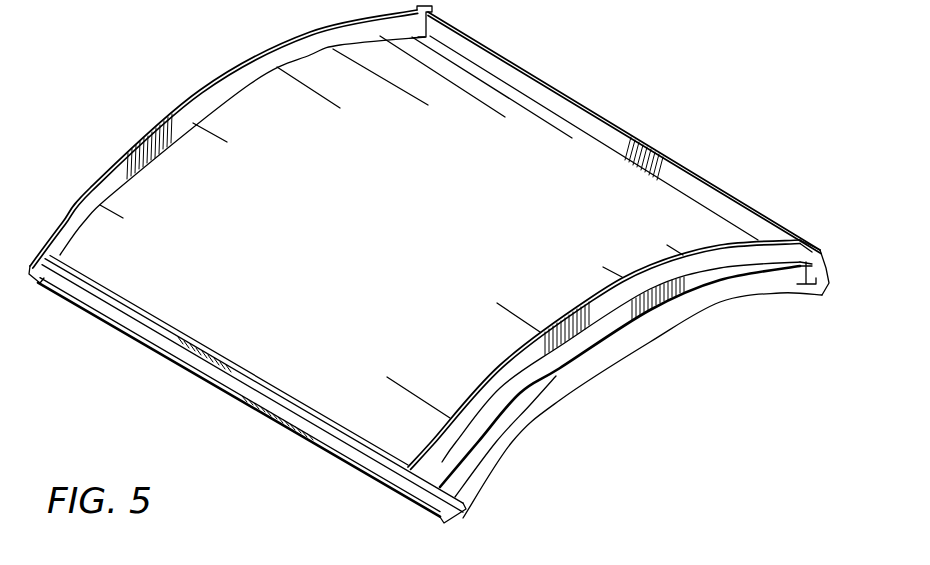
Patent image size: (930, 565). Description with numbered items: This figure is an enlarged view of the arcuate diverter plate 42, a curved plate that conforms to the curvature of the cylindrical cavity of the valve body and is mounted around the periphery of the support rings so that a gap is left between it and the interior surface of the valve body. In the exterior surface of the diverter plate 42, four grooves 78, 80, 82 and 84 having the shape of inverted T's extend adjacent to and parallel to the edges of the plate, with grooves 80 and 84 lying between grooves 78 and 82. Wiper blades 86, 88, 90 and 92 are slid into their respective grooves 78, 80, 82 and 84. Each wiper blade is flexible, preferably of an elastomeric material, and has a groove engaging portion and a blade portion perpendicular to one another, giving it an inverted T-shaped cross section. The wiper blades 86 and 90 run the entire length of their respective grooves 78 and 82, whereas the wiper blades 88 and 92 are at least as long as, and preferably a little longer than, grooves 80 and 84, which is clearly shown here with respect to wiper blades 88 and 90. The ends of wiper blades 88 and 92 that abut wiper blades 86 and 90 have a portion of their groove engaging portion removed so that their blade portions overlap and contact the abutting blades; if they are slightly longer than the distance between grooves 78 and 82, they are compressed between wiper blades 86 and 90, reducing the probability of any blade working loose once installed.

The diverter plate 42 is at (402, 239).
The groove 78 is at (612, 150).
The groove 80 is at (250, 84).
The groove 82 is at (147, 328).
The groove 84 is at (513, 387).
The wiper blade 86 is at (600, 115).
The wiper blade 88 is at (200, 90).
The wiper blade 90 is at (277, 396).
The wiper blade 92 is at (593, 299).